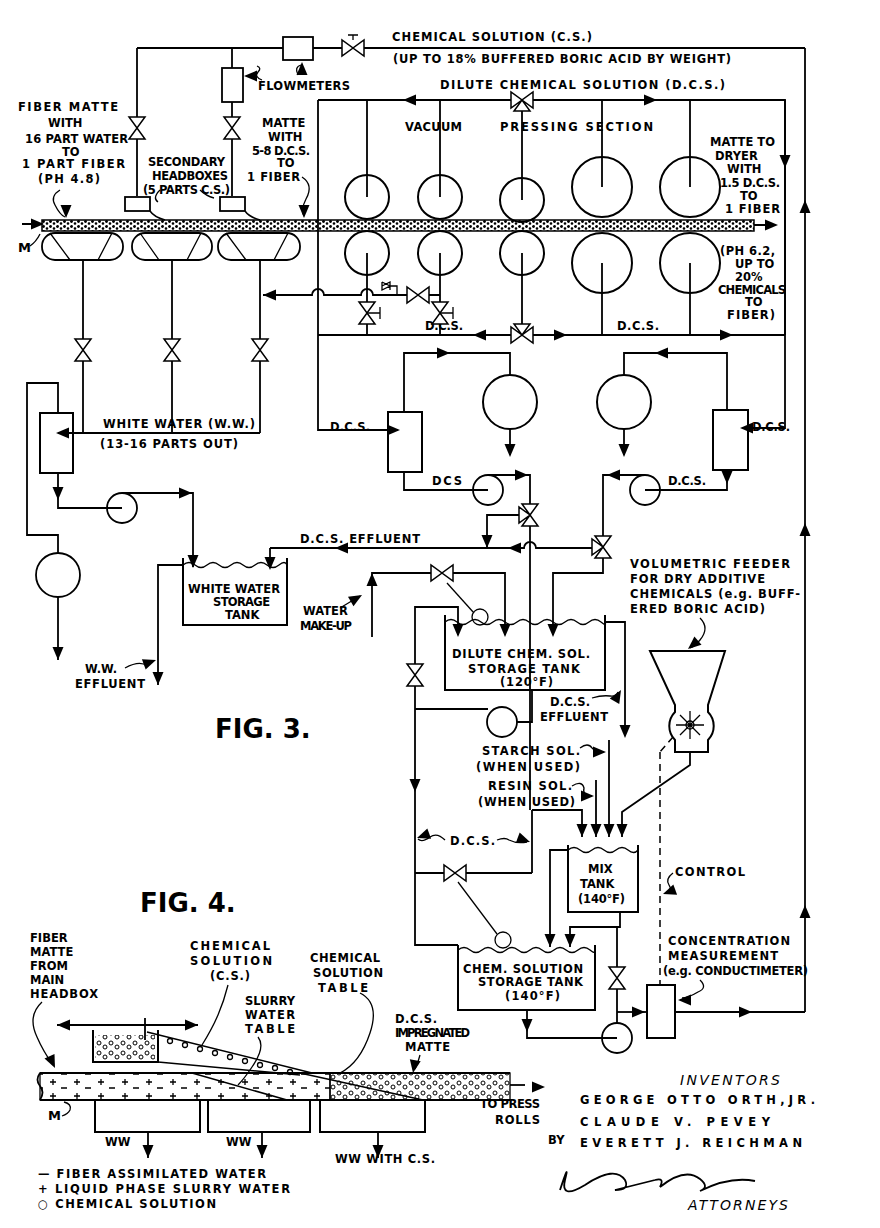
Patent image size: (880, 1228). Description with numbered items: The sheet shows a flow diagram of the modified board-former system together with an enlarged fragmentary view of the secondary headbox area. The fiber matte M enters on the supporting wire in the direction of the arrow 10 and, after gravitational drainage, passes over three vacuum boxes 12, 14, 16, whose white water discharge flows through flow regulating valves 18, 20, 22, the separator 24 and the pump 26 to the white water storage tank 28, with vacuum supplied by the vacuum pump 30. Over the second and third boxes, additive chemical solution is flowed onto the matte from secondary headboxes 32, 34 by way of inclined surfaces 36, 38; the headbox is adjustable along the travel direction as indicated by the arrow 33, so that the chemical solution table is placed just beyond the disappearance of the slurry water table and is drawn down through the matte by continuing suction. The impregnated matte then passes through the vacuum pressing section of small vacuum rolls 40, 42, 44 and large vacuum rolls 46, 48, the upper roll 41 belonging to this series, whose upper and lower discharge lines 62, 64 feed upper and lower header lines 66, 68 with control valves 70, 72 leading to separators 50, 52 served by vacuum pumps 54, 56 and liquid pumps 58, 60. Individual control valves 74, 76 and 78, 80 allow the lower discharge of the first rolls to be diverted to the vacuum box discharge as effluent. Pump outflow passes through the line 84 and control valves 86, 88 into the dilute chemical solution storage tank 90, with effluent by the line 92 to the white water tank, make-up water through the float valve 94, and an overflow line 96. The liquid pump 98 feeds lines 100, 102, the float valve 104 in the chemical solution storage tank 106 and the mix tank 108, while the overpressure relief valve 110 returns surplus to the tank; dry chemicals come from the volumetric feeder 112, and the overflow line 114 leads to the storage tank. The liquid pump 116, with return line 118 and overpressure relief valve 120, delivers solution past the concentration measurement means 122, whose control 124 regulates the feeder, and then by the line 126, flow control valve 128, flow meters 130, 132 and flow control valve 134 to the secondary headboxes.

In FIG. 3, the arrow 10 is at (24, 224).
In FIG. 3, the vacuum box 12 is at (63, 268).
In FIG. 4, the vacuum box 12 is at (172, 1137).
In FIG. 3, the vacuum box 14 is at (153, 266).
In FIG. 4, the vacuum box 14 is at (282, 1134).
In FIG. 3, the vacuum box 16 is at (239, 266).
In FIG. 4, the vacuum box 16 is at (402, 1134).
In FIG. 3, the flow regulating valve 18 is at (91, 345).
In FIG. 3, the flow regulating valve 20 is at (180, 345).
In FIG. 3, the flow regulating valve 22 is at (268, 345).
In FIG. 3, the separator 24 is at (73, 462).
In FIG. 3, the pump 26 is at (134, 516).
In FIG. 3, the white water storage tank 28 is at (233, 625).
In FIG. 3, the vacuum pump 30 is at (80, 575).
In FIG. 3, the secondary headbox 32 is at (125, 208).
In FIG. 4, the secondary headbox 32 is at (144, 1018).
In FIG. 4, the arrow 33 is at (127, 1034).
In FIG. 3, the secondary headbox 34 is at (241, 198).
In FIG. 3, the inclined surface 36 is at (157, 218).
In FIG. 4, the inclined surface 36 is at (282, 1055).
In FIG. 3, the inclined surface 38 is at (256, 218).
In FIG. 3, the small vacuum roll 40 is at (354, 178).
In FIG. 3, the press roll 41 is at (578, 168).
In FIG. 3, the small vacuum roll 42 is at (432, 177).
In FIG. 3, the small vacuum roll 44 is at (510, 176).
In FIG. 3, the large vacuum roll 46 is at (582, 243).
In FIG. 3, the large vacuum roll 48 is at (672, 163).
In FIG. 3, the separator 50 is at (422, 426).
In FIG. 3, the separator 52 is at (714, 412).
In FIG. 3, the vacuum pump 54 is at (525, 378).
In FIG. 3, the vacuum pump 56 is at (640, 372).
In FIG. 3, the liquid pump 58 is at (480, 476).
In FIG. 3, the liquid pump 60 is at (651, 475).
In FIG. 3, the upper discharge line 62 is at (367, 148).
In FIG. 3, the lower discharge line 64 is at (367, 333).
In FIG. 3, the upper header line 66 is at (778, 110).
In FIG. 3, the lower header line 68 is at (582, 338).
In FIG. 3, the control valve 70 is at (510, 104).
In FIG. 3, the control valve 72 is at (533, 324).
In FIG. 3, the control valve 74 is at (367, 304).
In FIG. 3, the control valve 76 is at (444, 310).
In FIG. 3, the control valve 78 is at (388, 280).
In FIG. 3, the control valve 80 is at (420, 300).
In FIG. 3, the line 84 is at (603, 483).
In FIG. 3, the control valve 86 is at (543, 522).
In FIG. 3, the control valve 88 is at (612, 546).
In FIG. 3, the dilute chemical solution storage tank 90 is at (452, 692).
In FIG. 3, the line 92 is at (270, 548).
In FIG. 3, the float valve 94 is at (449, 570).
In FIG. 3, the overflow line 96 is at (627, 680).
In FIG. 3, the liquid pump 98 is at (489, 731).
In FIG. 3, the feed line 100 is at (415, 762).
In FIG. 3, the feed line 102 is at (531, 816).
In FIG. 3, the float valve 104 is at (436, 884).
In FIG. 3, the chemical solution storage tank 106 is at (452, 944).
In FIG. 3, the mix tank 108 is at (618, 920).
In FIG. 3, the overpressure relief valve 110 is at (410, 684).
In FIG. 3, the volumetric feeder 112 is at (714, 658).
In FIG. 3, the overflow line 114 is at (552, 891).
In FIG. 3, the liquid pump 116 is at (612, 1040).
In FIG. 3, the line 118 is at (620, 947).
In FIG. 3, the overpressure relief valve 120 is at (626, 980).
In FIG. 3, the concentration measurement means 122 is at (675, 1026).
In FIG. 3, the control 124 is at (662, 917).
In FIG. 3, the line 126 is at (805, 832).
In FIG. 3, the flow control valve 128 is at (348, 38).
In FIG. 3, the flow meter 130 is at (284, 38).
In FIG. 3, the flow meter 132 is at (222, 74).
In FIG. 3, the flow control valve 134 is at (145, 122).